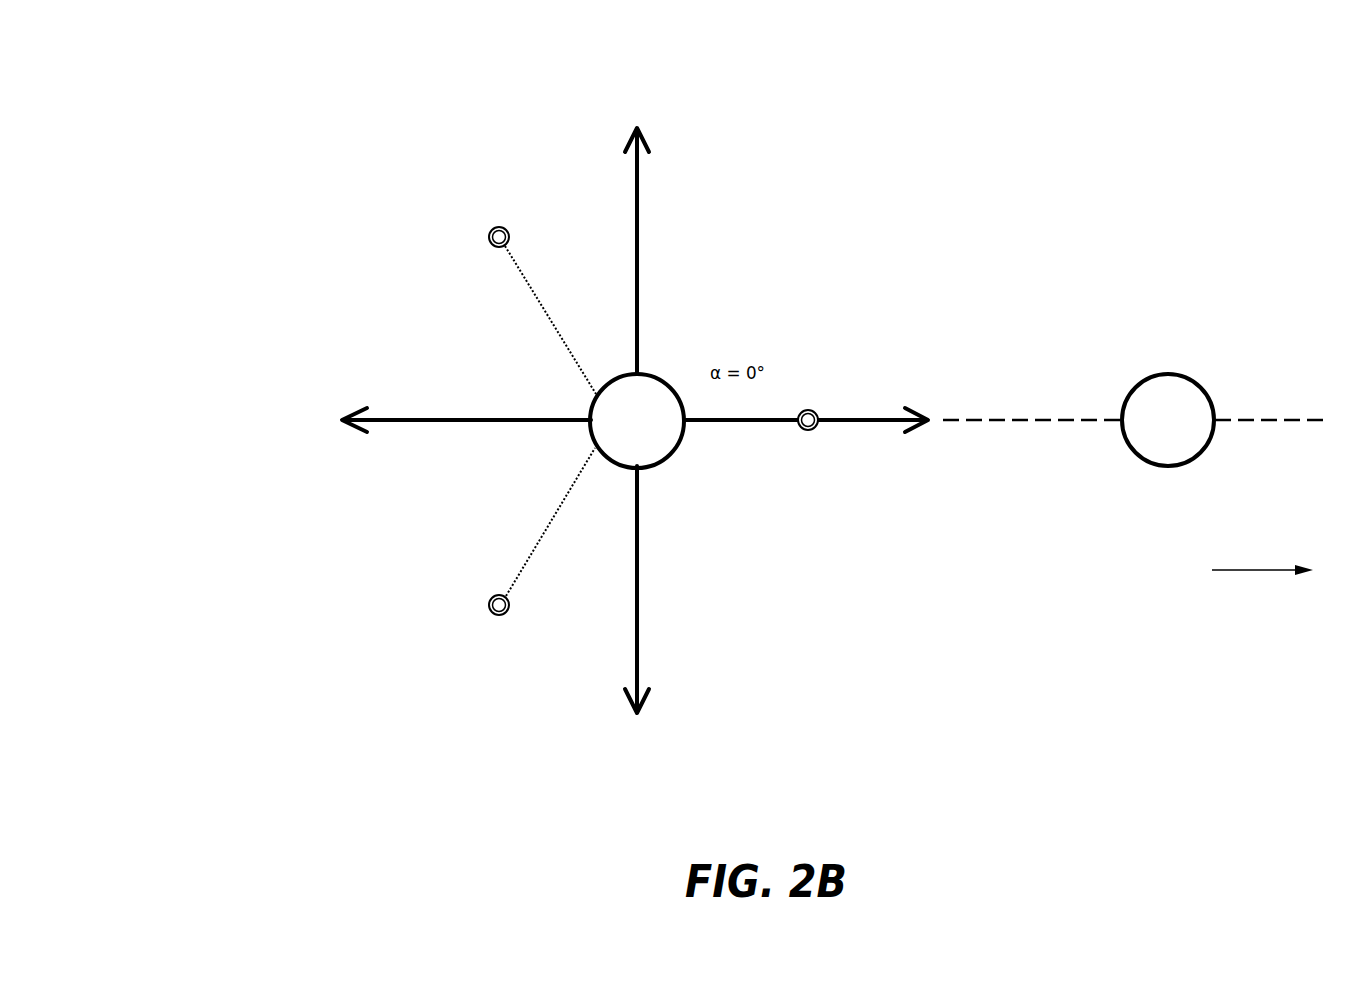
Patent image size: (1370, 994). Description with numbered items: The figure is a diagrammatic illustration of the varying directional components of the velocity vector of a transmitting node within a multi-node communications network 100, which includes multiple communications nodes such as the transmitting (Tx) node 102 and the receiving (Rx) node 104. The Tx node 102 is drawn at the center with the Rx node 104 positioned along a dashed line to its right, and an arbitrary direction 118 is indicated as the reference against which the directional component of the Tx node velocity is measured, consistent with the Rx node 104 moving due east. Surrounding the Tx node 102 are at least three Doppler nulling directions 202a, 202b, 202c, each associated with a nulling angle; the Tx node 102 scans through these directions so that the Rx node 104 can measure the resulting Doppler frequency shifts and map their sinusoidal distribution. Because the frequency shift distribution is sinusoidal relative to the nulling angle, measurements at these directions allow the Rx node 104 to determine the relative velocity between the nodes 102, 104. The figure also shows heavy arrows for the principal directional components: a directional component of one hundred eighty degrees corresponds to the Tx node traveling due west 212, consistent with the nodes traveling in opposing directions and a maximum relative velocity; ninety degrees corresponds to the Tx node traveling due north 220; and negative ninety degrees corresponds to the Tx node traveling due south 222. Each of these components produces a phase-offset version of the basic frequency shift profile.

The multi-node communications network 100 is at (230, 112).
The transmitting (Tx) node 102 is at (663, 433).
The receiving (Rx) node 104 is at (1177, 392).
The arbitrary direction 118 is at (1237, 567).
The Doppler nulling direction 202a is at (815, 411).
The Doppler nulling direction 202b is at (504, 228).
The Doppler nulling direction 202c is at (492, 597).
The due west direction 212 is at (472, 418).
The due north direction 220 is at (638, 242).
The due south direction 222 is at (637, 602).